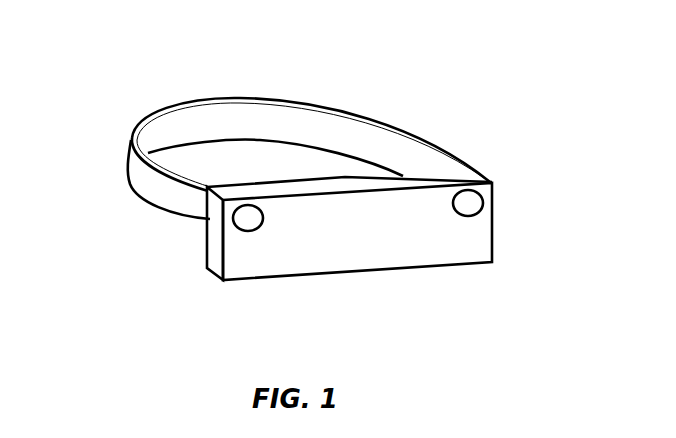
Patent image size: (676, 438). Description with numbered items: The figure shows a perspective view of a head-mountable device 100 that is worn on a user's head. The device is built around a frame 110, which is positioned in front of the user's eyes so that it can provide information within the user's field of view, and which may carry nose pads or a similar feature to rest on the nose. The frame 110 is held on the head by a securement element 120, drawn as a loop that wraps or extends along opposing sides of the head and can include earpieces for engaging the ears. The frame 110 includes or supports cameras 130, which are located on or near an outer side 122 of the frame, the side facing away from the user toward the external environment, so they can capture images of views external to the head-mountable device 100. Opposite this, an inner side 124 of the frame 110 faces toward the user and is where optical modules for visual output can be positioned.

The head-mountable device 100 is at (80, 98).
The frame 110 is at (482, 170).
The securement element 120 is at (137, 170).
The outer side 122 is at (480, 258).
The inner side 124 is at (262, 180).
The cameras 130 is at (234, 218).